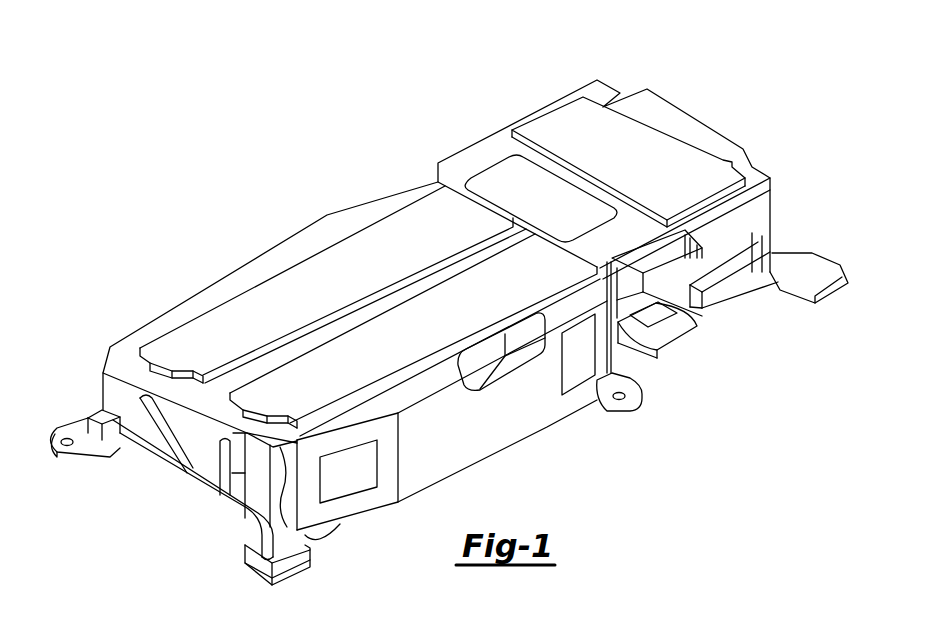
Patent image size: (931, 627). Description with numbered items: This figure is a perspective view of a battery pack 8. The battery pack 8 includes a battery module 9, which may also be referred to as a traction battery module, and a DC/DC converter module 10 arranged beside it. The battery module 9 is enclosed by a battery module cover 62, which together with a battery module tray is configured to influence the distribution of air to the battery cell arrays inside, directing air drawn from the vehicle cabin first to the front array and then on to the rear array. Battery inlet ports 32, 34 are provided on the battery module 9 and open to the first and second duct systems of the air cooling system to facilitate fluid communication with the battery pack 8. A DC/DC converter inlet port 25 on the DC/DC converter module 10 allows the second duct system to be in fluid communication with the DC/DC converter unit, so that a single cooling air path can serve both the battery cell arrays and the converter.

The battery pack 8 is at (503, 79).
The battery module 9 is at (224, 292).
The DC/DC converter module 10 is at (667, 125).
The battery module cover 62 is at (355, 228).
The DC/DC converter inlet port 25 is at (727, 283).
The battery inlet port 32 is at (350, 493).
The battery inlet port 34 is at (579, 383).